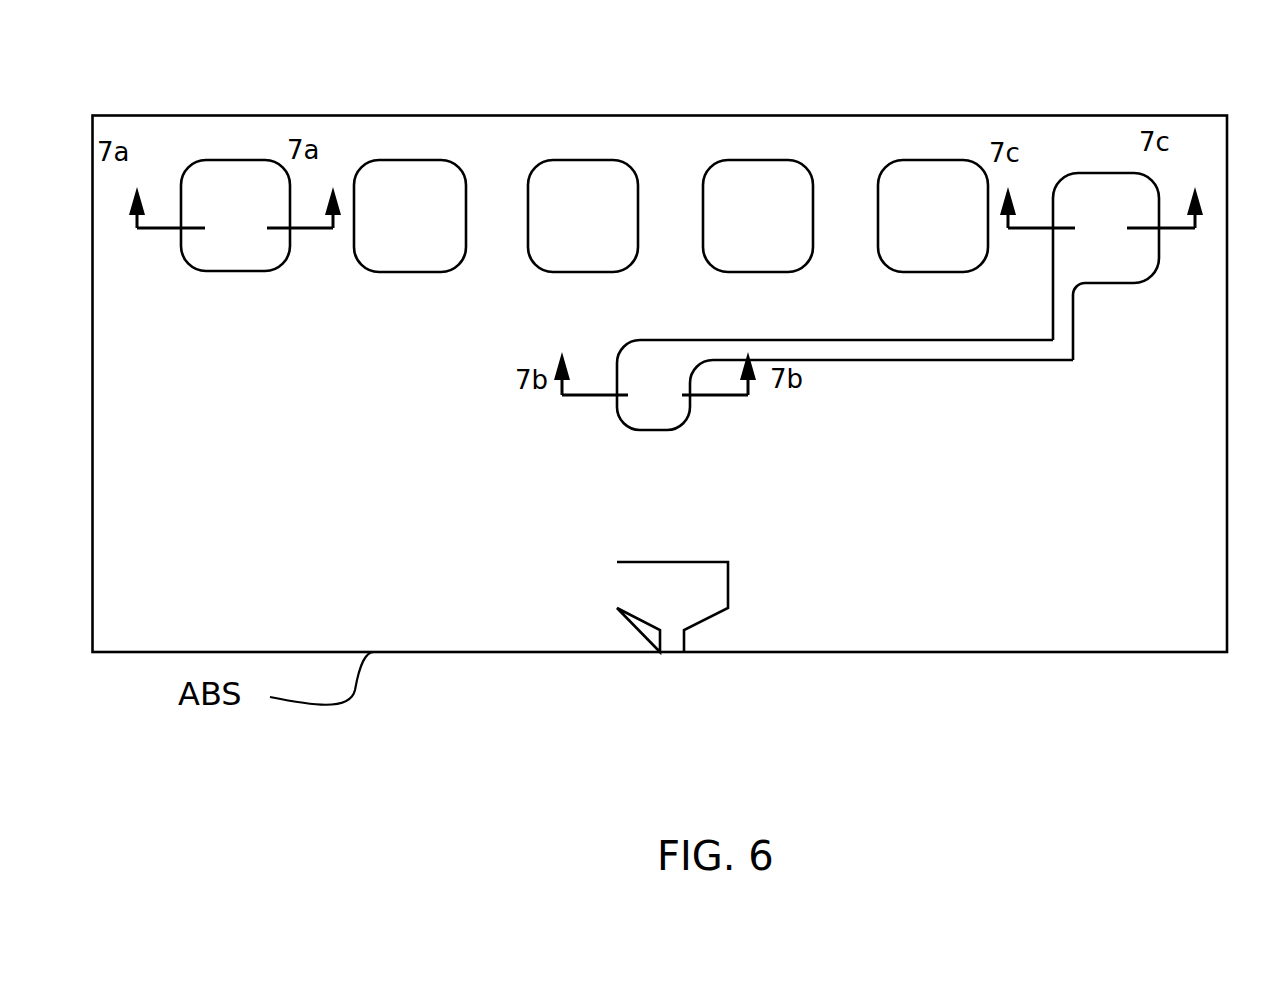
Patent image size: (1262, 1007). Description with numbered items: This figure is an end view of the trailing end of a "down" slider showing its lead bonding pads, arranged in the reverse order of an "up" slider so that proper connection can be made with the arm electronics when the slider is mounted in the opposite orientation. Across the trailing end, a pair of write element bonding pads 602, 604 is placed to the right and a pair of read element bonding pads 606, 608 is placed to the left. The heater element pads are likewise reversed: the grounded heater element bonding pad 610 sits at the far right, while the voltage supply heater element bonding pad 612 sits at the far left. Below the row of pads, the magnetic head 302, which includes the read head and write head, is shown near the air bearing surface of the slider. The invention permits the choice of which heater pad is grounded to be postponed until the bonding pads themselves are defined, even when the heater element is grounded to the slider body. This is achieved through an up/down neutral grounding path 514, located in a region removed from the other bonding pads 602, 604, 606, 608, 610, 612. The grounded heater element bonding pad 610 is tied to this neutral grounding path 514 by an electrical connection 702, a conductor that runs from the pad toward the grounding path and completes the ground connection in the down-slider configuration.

The voltage supply heater element bonding pad 612 is at (237, 177).
The read element bonding pad 606 is at (420, 178).
The read element bonding pad 608 is at (582, 183).
The write element bonding pad 602 is at (752, 190).
The write element bonding pad 604 is at (932, 180).
The grounded heater element bonding pad 610 is at (1107, 190).
The electrical connection 702 is at (912, 345).
The up/down neutral grounding path 514 is at (659, 406).
The magnetic head 302 is at (728, 570).